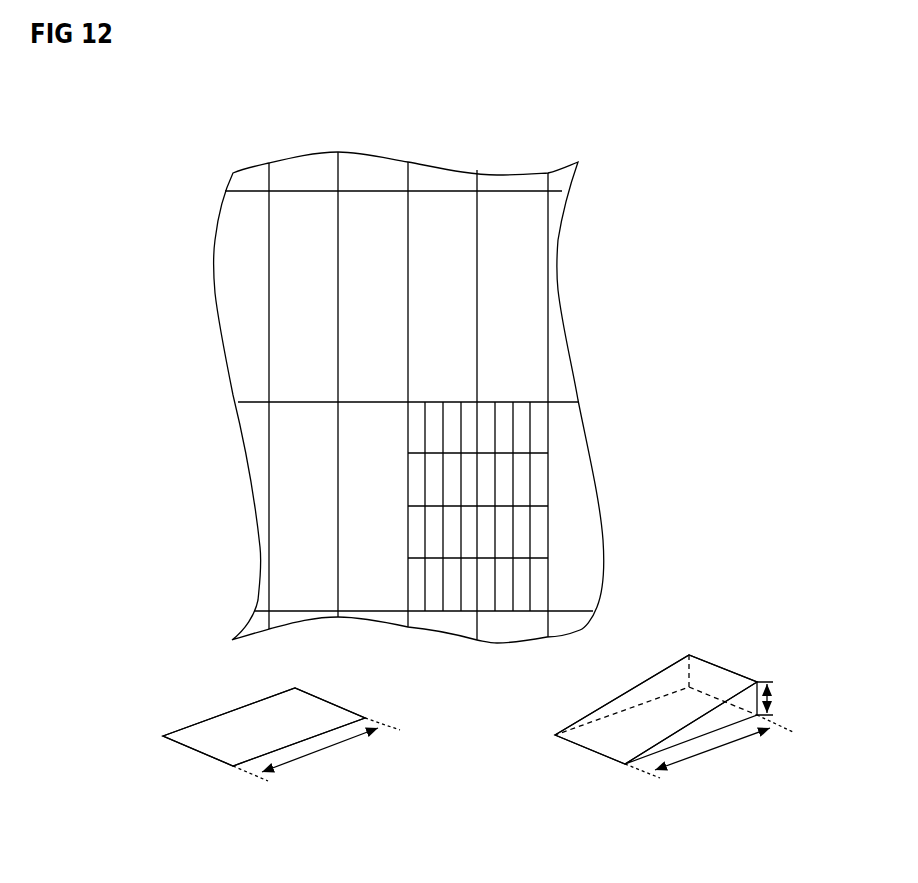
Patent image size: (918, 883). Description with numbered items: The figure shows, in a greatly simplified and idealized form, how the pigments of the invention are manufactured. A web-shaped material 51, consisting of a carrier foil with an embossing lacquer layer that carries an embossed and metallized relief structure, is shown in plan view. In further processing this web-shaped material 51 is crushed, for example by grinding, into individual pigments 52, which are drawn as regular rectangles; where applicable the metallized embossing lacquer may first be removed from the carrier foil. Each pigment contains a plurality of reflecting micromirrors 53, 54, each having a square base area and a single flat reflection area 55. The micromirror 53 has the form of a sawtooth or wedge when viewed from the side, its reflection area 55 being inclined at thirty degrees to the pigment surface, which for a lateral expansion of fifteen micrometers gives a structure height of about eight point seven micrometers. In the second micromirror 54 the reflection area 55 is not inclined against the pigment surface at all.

The web-shaped material 51 is at (558, 247).
The individual pigments 52 is at (280, 288).
The micromirror 53 is at (543, 420).
The micromirror 54 is at (452, 417).
The reflection area 55 is at (298, 717).